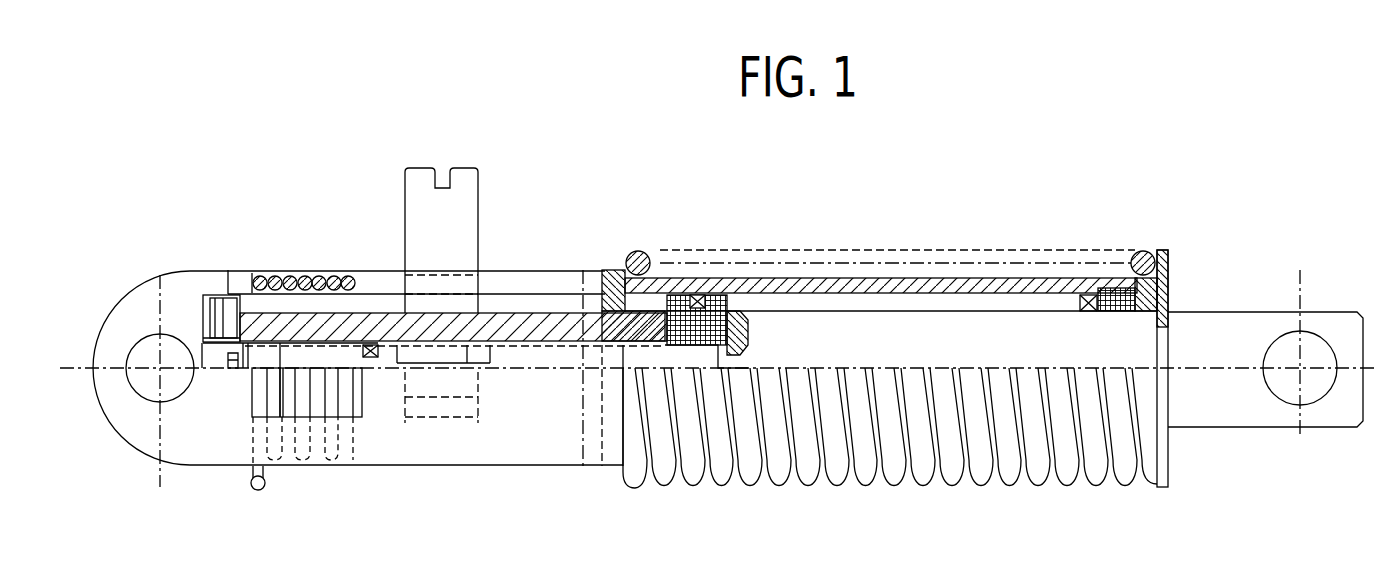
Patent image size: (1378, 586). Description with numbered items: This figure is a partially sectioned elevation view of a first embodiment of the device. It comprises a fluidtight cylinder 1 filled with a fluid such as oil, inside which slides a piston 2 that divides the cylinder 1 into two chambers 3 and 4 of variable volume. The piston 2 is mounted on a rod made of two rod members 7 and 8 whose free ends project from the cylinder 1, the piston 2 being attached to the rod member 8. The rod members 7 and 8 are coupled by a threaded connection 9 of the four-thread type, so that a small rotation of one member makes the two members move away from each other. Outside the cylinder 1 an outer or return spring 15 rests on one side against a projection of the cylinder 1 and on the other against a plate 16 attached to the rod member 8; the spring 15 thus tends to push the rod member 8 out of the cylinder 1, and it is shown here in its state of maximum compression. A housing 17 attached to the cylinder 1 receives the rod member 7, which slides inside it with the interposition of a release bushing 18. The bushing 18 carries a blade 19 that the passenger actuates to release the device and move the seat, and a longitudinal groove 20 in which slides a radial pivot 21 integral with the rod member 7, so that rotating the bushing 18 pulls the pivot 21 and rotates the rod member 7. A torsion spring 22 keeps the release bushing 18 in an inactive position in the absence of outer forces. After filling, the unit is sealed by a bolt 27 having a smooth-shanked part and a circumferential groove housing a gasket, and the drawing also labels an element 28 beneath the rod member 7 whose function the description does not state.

The fluidtight cylinder 1 is at (900, 285).
The piston 2 is at (715, 303).
The chamber 3 is at (663, 290).
The chamber 4 is at (815, 300).
The rod member 7 is at (452, 332).
The rod member 8 is at (997, 330).
The threaded connection 9 is at (552, 358).
The outer or return spring 15 is at (925, 475).
The plate 16 is at (1165, 273).
The housing 17 is at (218, 448).
The release bushing 18 is at (554, 284).
The blade 19 is at (472, 207).
The longitudinal groove 20 is at (245, 302).
The radial pivot 21 is at (222, 318).
The torsion spring 22 is at (297, 278).
The bolt 27 is at (308, 358).
The seal 28 is at (372, 350).